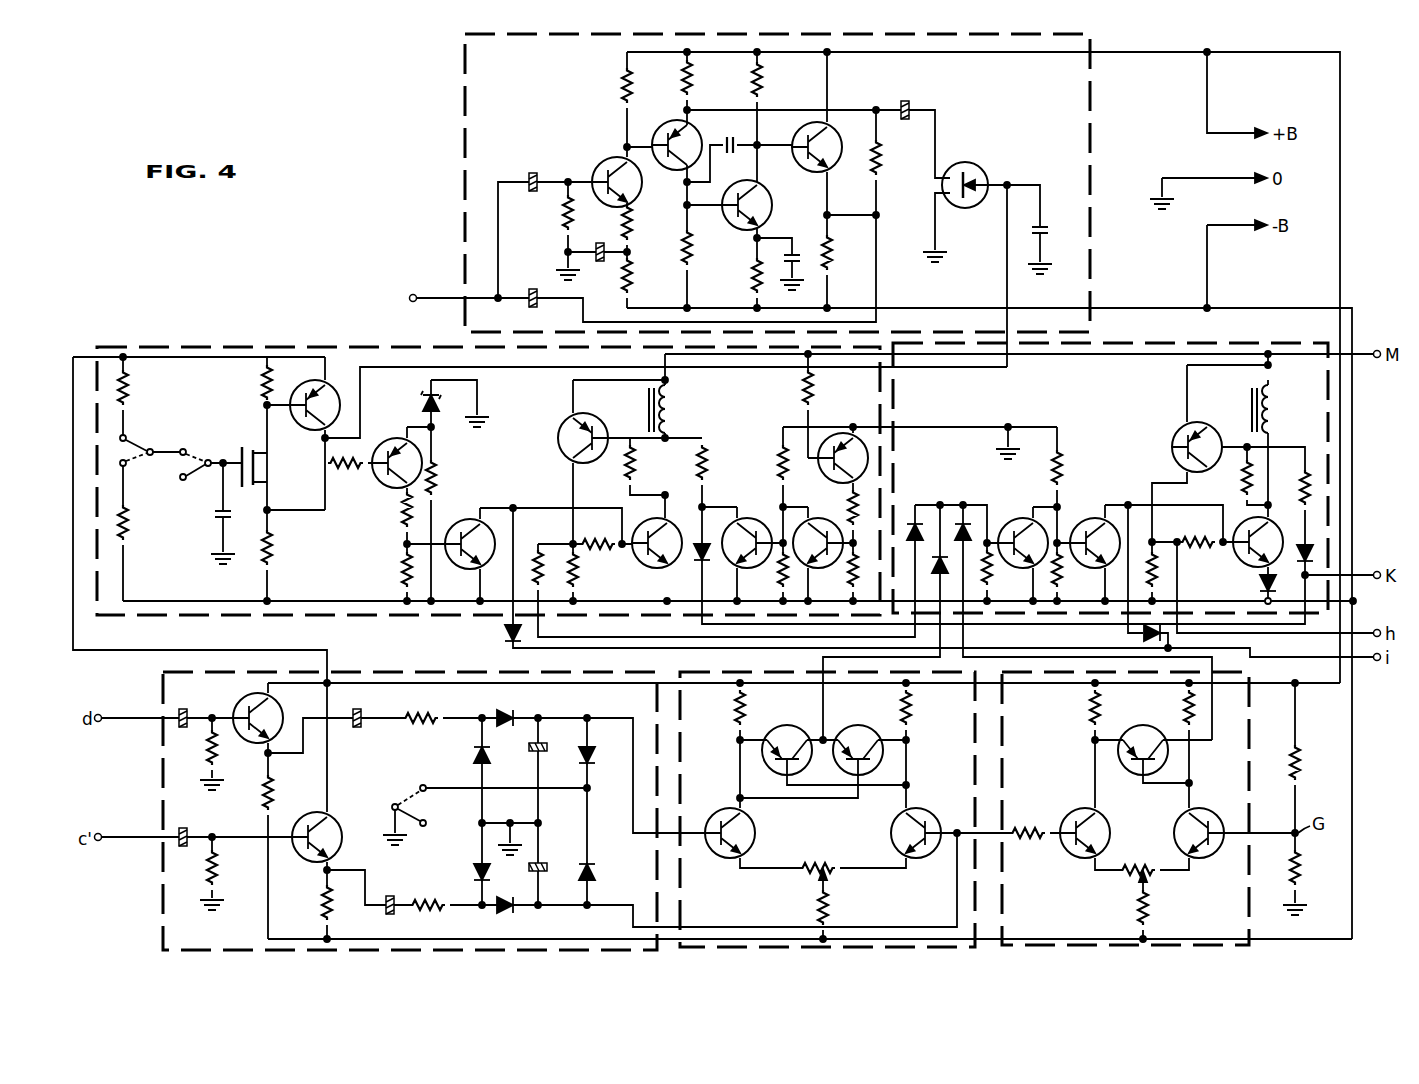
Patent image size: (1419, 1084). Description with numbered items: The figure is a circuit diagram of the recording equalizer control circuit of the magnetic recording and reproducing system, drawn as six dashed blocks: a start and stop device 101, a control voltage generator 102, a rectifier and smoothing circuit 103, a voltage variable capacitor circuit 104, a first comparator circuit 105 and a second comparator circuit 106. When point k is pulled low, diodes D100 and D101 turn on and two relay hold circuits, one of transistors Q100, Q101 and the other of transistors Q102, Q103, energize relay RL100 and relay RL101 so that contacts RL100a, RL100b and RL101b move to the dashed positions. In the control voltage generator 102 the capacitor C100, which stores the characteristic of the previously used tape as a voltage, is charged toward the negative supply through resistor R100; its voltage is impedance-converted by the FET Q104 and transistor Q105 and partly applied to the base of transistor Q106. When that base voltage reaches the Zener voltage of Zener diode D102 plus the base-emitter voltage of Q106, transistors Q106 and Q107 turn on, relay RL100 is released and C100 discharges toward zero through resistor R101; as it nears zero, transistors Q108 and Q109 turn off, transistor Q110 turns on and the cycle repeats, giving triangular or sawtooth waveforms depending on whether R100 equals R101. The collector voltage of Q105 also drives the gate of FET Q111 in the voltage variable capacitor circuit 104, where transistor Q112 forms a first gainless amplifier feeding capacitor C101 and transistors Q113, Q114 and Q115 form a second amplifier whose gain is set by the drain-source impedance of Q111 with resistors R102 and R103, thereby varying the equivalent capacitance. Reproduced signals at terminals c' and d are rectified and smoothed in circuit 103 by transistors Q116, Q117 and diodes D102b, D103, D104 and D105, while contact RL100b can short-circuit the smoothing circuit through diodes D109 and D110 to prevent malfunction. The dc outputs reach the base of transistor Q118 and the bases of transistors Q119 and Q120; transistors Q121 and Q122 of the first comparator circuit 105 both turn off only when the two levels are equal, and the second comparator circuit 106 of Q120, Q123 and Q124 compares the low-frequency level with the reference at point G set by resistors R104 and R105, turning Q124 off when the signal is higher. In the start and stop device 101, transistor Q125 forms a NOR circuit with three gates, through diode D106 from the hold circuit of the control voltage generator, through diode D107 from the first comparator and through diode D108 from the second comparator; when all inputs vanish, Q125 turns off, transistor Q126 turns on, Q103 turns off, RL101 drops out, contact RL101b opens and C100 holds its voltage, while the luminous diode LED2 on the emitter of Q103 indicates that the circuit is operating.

The start and stop device 101 is at (1142, 345).
The control voltage generator 102 is at (305, 347).
The rectifier and smoothing circuit 103 is at (446, 672).
The voltage variable capacitor circuit 104 is at (1092, 152).
The first comparator circuit 105 is at (746, 676).
The second comparator circuit 106 is at (1250, 735).
The capacitor C100 is at (219, 513).
The capacitor C101 is at (543, 278).
The resistor R100 is at (124, 523).
The resistor R101 is at (125, 376).
The resistor R102 is at (698, 89).
The resistor R103 is at (882, 158).
The resistor R104 is at (1299, 763).
The resistor R105 is at (1300, 857).
The relay RL100 is at (668, 405).
The relay RL101 is at (1278, 397).
The relay contact RL100a is at (131, 446).
The relay contact RL100b is at (402, 780).
The relay contact RL101b is at (191, 457).
The diode D100 is at (1314, 548).
The diode D101 is at (708, 540).
The Zener diode D102 is at (429, 402).
The diode D102b is at (480, 755).
The diode D103 is at (510, 716).
The diode D104 is at (480, 872).
The diode D105 is at (515, 910).
The diode D106 is at (911, 518).
The diode D107 is at (943, 555).
The diode D108 is at (966, 522).
The diode D109 is at (592, 760).
The diode D110 is at (591, 870).
The luminous diode LED2 is at (1261, 581).
The transistor Q100 is at (565, 424).
The transistor Q101 is at (640, 565).
The transistor Q102 is at (1178, 430).
The transistor Q103 is at (1241, 559).
The FET Q104 is at (258, 470).
The transistor Q105 is at (316, 384).
The transistor Q106 is at (397, 437).
The transistor Q107 is at (467, 519).
The transistor Q108 is at (868, 432).
The transistor Q109 is at (837, 518).
The transistor Q110 is at (778, 512).
The FET Q111 is at (978, 163).
The transistor Q112 is at (612, 160).
The transistor Q113 is at (702, 147).
The transistor Q114 is at (770, 205).
The transistor Q115 is at (831, 122).
The transistor Q116 is at (241, 705).
The transistor Q117 is at (322, 815).
The transistor Q118 is at (755, 833).
The transistor Q119 is at (892, 833).
The transistor Q120 is at (1068, 854).
The transistor Q121 is at (795, 725).
The transistor Q122 is at (871, 725).
The transistor Q123 is at (1175, 838).
The transistor Q124 is at (1126, 732).
The transistor Q125 is at (997, 522).
The transistor Q126 is at (1082, 522).